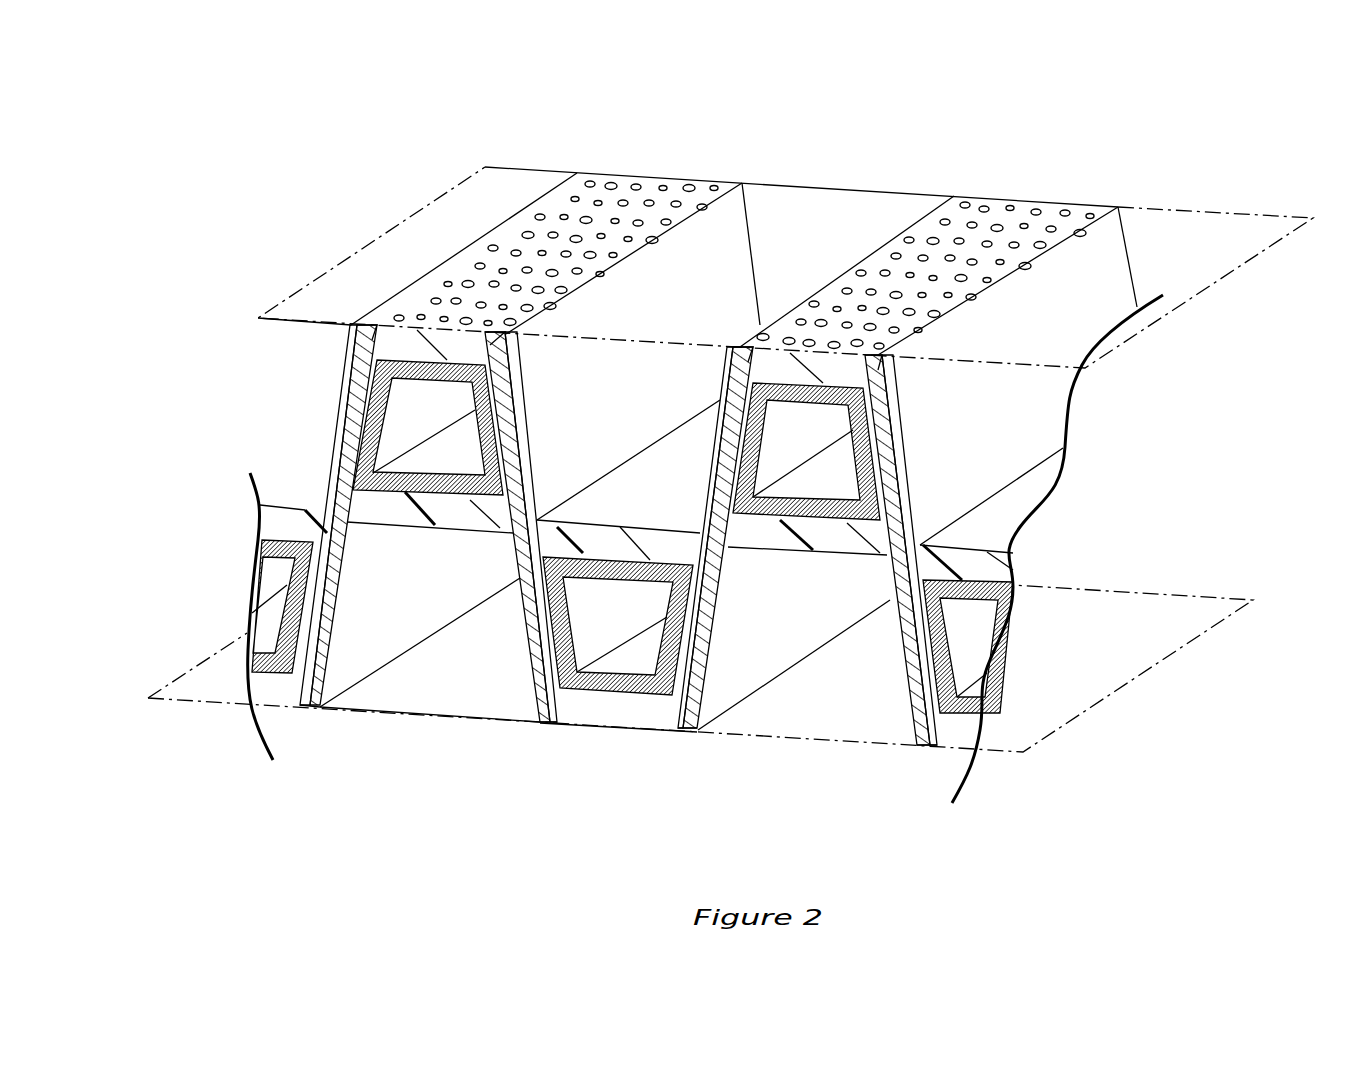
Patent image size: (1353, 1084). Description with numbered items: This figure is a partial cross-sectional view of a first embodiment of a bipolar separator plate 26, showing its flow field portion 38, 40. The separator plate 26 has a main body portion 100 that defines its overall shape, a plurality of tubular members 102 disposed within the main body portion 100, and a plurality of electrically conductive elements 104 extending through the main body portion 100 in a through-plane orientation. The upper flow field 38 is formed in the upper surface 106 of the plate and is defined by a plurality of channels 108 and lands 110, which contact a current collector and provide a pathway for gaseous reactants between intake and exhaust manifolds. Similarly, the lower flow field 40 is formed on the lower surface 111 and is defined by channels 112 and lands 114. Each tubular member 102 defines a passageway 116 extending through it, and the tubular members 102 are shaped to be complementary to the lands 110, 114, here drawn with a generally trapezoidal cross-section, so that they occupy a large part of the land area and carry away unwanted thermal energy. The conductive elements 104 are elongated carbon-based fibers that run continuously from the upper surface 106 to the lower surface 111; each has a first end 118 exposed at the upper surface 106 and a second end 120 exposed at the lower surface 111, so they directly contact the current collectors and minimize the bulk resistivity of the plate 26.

The flow field 38 is at (232, 178).
The bipolar separator plate 26 is at (1140, 160).
The flow field 40 is at (525, 870).
The upper surface 106 is at (1237, 217).
The lands 110 is at (640, 185).
The first end 118 is at (360, 322).
The electrically conductive elements 104 is at (327, 607).
The tubular members 102 is at (375, 410).
The passageway 116 is at (425, 432).
The channels 108 is at (304, 485).
The main body portion 100 is at (993, 570).
The channels 112 is at (447, 682).
The lower surface 111 is at (1193, 600).
The lands 114 is at (355, 653).
The second end 120 is at (305, 707).